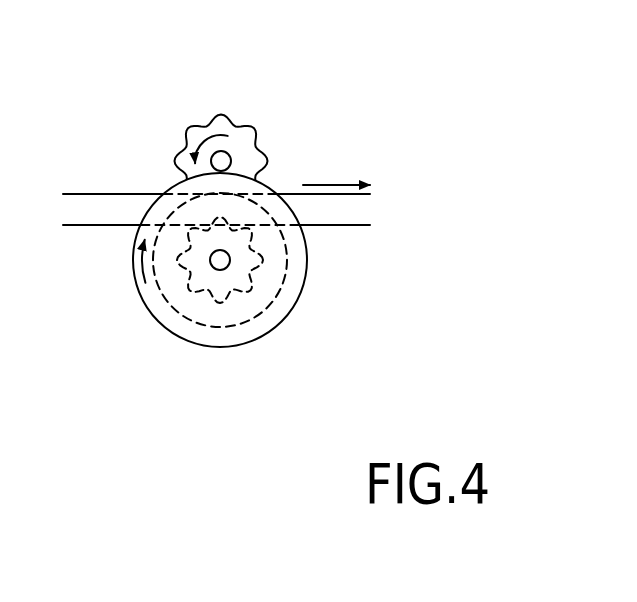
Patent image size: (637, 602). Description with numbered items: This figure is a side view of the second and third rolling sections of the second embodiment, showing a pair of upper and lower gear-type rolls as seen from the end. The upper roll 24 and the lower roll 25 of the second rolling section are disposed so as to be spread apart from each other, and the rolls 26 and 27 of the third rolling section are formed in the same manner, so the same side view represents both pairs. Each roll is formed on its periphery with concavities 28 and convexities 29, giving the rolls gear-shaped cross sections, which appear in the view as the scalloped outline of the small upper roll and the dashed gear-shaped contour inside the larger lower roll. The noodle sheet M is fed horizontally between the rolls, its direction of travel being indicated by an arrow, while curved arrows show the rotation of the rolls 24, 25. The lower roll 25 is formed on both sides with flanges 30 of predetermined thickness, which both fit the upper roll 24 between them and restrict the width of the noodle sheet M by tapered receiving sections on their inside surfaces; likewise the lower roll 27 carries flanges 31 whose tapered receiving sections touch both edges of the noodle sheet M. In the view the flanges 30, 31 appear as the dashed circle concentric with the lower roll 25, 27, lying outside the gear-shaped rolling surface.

The noodle sheet M is at (107, 192).
The upper roll 24 is at (249, 113).
The upper roll 26 is at (249, 113).
The concavities 28 is at (203, 125).
The convexities 29 is at (218, 115).
The lower roll 25 is at (191, 297).
The lower roll 27 is at (180, 292).
The flanges 30 is at (251, 308).
The flanges 31 is at (245, 330).